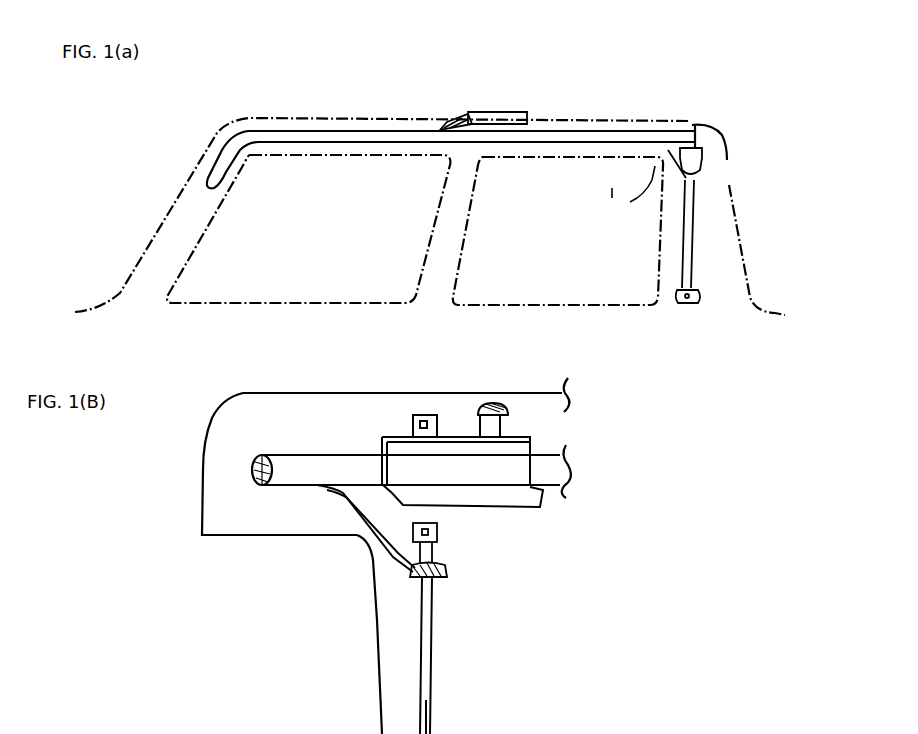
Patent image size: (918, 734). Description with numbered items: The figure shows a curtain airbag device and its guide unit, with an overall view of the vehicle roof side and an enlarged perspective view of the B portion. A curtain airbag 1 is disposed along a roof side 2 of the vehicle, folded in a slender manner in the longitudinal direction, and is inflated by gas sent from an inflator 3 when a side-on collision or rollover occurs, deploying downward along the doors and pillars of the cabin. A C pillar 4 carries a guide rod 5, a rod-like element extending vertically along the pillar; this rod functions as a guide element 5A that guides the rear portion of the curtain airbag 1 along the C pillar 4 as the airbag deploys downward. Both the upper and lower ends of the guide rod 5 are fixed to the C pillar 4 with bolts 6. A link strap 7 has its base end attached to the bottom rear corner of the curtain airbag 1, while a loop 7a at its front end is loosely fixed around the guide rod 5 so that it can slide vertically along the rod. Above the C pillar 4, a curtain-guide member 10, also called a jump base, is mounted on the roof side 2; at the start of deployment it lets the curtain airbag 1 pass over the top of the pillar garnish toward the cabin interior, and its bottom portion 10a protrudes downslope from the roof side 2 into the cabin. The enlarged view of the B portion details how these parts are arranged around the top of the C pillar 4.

In FIG. 1A, the curtain airbag 1 is at (405, 134).
In FIG. 1B, the curtain airbag 1 is at (303, 468).
In FIG. 1A, the roof side 2 is at (276, 115).
In FIG. 1B, the roof side 2 is at (273, 403).
In FIG. 1A, the inflator 3 is at (500, 126).
In FIG. 1A, the C pillar 4 is at (722, 212).
In FIG. 1B, the C pillar 4 is at (393, 632).
In FIG. 1A, the guide rod 5 is at (688, 262).
In FIG. 1B, the guide rod 5 is at (433, 703).
In FIG. 1A, the guide element 5A is at (700, 238).
In FIG. 1B, the guide element 5A is at (444, 678).
In FIG. 1B, the bolt 6 is at (437, 535).
In FIG. 1B, the link strap 7 is at (397, 553).
In FIG. 1B, the loop 7a is at (437, 563).
In FIG. 1A, the curtain-guide member 10 is at (697, 124).
In FIG. 1B, the curtain-guide member 10 is at (500, 500).
In FIG. 1B, the bottom portion 10a is at (560, 496).
In FIG. 1A, the B portion B is at (736, 109).